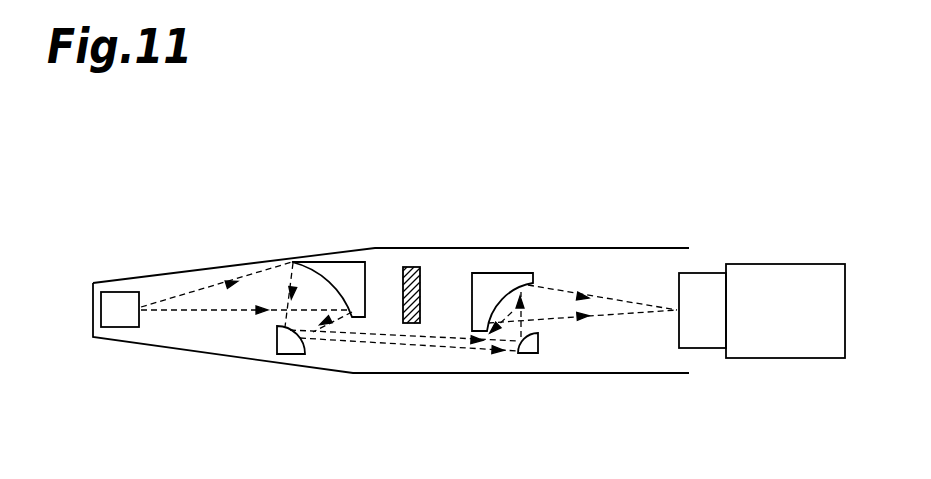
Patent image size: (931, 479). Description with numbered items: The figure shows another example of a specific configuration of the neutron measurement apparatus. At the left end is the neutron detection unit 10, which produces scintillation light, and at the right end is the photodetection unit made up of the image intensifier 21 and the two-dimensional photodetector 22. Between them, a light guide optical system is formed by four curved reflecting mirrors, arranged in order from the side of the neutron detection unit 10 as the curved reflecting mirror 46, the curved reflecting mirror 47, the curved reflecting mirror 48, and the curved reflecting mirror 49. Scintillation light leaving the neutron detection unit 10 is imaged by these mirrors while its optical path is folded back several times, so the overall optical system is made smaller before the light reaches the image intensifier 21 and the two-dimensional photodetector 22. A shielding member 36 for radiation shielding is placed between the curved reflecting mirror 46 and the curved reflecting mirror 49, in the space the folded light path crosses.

The neutron detection unit 10 is at (118, 292).
The curved reflecting mirror 46 is at (337, 267).
The curved reflecting mirror 47 is at (292, 352).
The shielding member 36 is at (413, 267).
The curved reflecting mirror 49 is at (505, 280).
The curved reflecting mirror 48 is at (525, 353).
The image intensifier 21 is at (713, 337).
The two-dimensional photodetector 22 is at (780, 347).